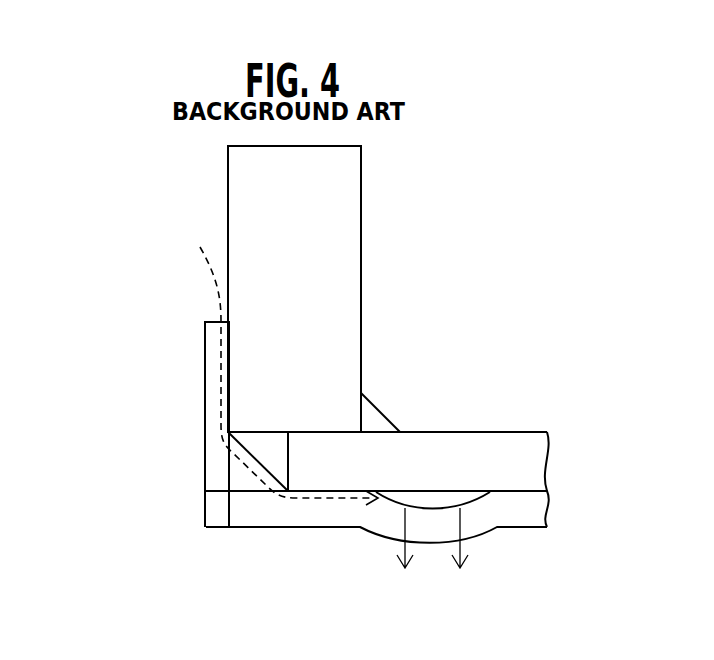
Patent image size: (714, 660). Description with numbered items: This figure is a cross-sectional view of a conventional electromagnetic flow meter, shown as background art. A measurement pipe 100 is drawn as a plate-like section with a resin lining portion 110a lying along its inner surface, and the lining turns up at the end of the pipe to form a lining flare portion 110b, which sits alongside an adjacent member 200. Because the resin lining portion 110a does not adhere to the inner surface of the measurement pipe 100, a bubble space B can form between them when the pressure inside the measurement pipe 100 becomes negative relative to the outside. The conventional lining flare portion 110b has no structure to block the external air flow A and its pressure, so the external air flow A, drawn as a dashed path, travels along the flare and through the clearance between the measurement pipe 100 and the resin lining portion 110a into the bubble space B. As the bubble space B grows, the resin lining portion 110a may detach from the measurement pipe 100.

The upper block / heat source member 200 is at (330, 226).
The measurement pipe 100 is at (512, 432).
The resin lining portion 110a is at (520, 514).
The lining flare portion 110b is at (205, 384).
The external air flow A is at (284, 363).
The bubble space B is at (432, 500).